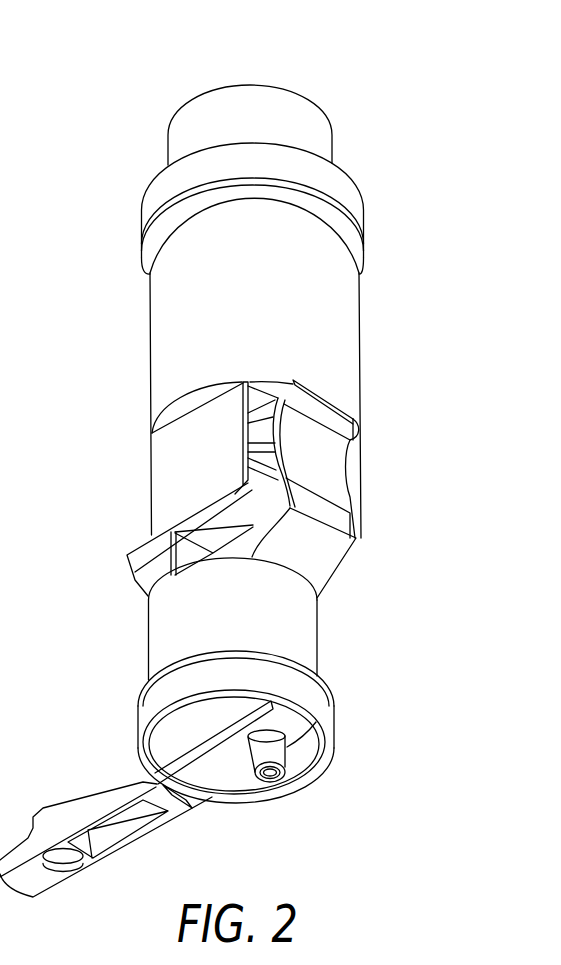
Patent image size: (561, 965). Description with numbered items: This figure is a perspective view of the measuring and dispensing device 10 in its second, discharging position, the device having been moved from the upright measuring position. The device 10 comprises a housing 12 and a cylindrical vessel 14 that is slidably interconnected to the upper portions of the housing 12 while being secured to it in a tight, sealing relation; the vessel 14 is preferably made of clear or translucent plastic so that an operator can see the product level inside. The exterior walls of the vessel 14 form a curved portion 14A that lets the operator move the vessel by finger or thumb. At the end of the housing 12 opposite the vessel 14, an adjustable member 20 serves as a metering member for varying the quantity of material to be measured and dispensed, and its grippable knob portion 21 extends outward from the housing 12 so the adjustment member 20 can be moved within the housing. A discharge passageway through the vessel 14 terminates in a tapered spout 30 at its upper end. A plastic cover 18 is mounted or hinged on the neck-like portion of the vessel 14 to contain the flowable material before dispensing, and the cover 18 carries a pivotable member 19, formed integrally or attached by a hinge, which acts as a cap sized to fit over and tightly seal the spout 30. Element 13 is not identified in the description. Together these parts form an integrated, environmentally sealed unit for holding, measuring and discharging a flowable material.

The device 10 is at (189, 93).
The adjustable member 20 is at (285, 117).
The grippable knob portion 21 is at (185, 132).
The housing 12 is at (265, 329).
The key panel 13 is at (178, 455).
The curved portion 14A is at (333, 479).
The vessel 14 is at (248, 626).
The cover 18 is at (317, 697).
The tapered spout 30 is at (275, 752).
The pivotable member 19 is at (60, 813).